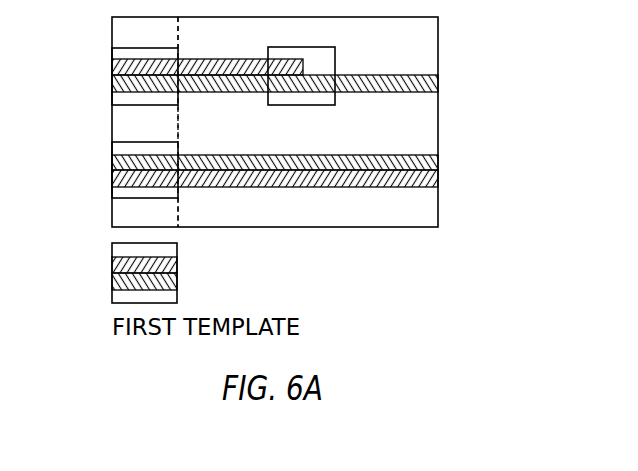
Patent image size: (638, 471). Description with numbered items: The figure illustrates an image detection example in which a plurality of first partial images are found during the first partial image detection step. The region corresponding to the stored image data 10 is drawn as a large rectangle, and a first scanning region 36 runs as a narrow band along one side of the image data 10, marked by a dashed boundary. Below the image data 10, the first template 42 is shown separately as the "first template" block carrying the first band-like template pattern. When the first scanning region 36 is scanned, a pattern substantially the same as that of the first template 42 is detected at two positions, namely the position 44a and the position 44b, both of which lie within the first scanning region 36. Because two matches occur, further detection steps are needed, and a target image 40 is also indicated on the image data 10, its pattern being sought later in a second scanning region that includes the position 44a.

The image data 10 is at (440, 122).
The first scanning region 36 is at (180, 117).
The target image 40 is at (336, 61).
The first template 42 is at (178, 248).
The position 44a is at (112, 51).
The position 44b is at (112, 190).